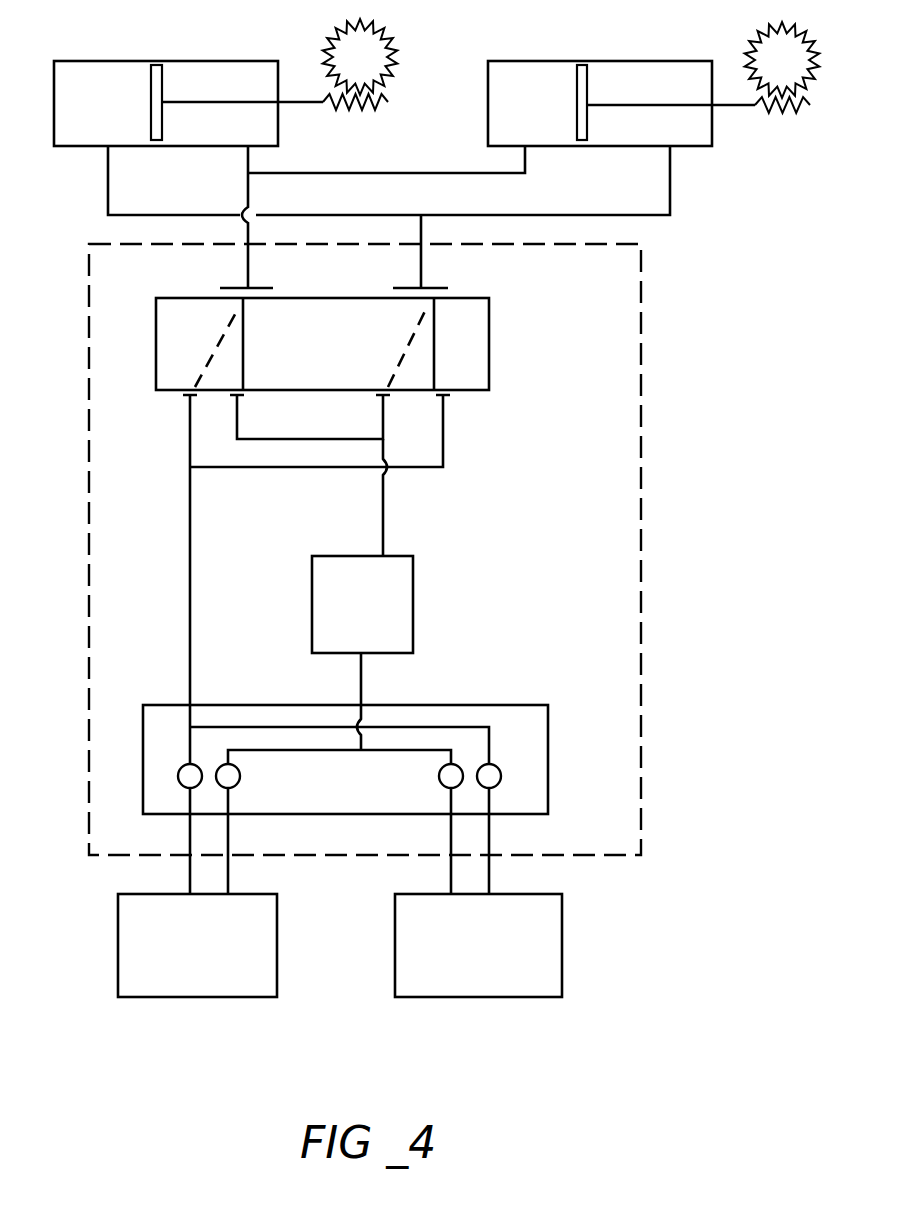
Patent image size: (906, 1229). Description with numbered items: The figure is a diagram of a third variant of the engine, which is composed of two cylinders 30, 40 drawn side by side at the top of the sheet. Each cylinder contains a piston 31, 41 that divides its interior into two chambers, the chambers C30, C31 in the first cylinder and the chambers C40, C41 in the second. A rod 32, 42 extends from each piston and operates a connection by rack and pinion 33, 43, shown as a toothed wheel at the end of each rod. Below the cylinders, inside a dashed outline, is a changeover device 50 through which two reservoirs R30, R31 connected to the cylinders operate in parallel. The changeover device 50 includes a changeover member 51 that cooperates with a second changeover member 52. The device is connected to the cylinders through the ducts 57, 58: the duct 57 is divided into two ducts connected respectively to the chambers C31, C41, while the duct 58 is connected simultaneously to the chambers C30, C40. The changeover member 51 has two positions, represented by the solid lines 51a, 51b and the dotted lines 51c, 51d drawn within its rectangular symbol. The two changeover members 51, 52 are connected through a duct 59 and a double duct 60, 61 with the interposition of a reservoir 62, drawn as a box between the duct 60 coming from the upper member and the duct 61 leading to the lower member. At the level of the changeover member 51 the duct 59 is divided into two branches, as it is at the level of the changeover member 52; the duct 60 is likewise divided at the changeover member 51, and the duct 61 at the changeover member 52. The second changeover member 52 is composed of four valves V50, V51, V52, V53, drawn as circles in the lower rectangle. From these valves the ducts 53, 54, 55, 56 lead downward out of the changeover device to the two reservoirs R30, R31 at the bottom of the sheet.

The cylinder 30 is at (117, 61).
The chamber C30 is at (72, 92).
The chamber C31 is at (248, 73).
The piston 31 is at (160, 82).
The rod 32 is at (257, 105).
The rack and pinion connection 33 is at (375, 53).
The cylinder 40 is at (560, 62).
The chamber C41 is at (507, 92).
The chamber C40 is at (682, 82).
The piston 41 is at (582, 87).
The rod 42 is at (680, 107).
The rack and pinion connection 43 is at (797, 77).
The duct 57 is at (250, 238).
The duct 58 is at (421, 238).
The changeover device 50 is at (618, 636).
The changeover member 51 is at (355, 344).
The solid line position 51a is at (243, 343).
The solid line position 51b is at (437, 347).
The dotted line position 51c is at (217, 347).
The dotted line position 51d is at (408, 348).
The duct 59 is at (190, 550).
The duct 60 is at (383, 507).
The duct 61 is at (361, 680).
The reservoir 62 is at (413, 602).
The second changeover member 52 is at (531, 737).
The valve V50 is at (178, 778).
The valve V51 is at (240, 775).
The valve V52 is at (439, 773).
The valve V53 is at (497, 784).
The duct 53 is at (189, 878).
The duct 54 is at (229, 873).
The duct 55 is at (450, 876).
The duct 56 is at (490, 873).
The reservoir R30 is at (186, 980).
The reservoir R31 is at (468, 987).